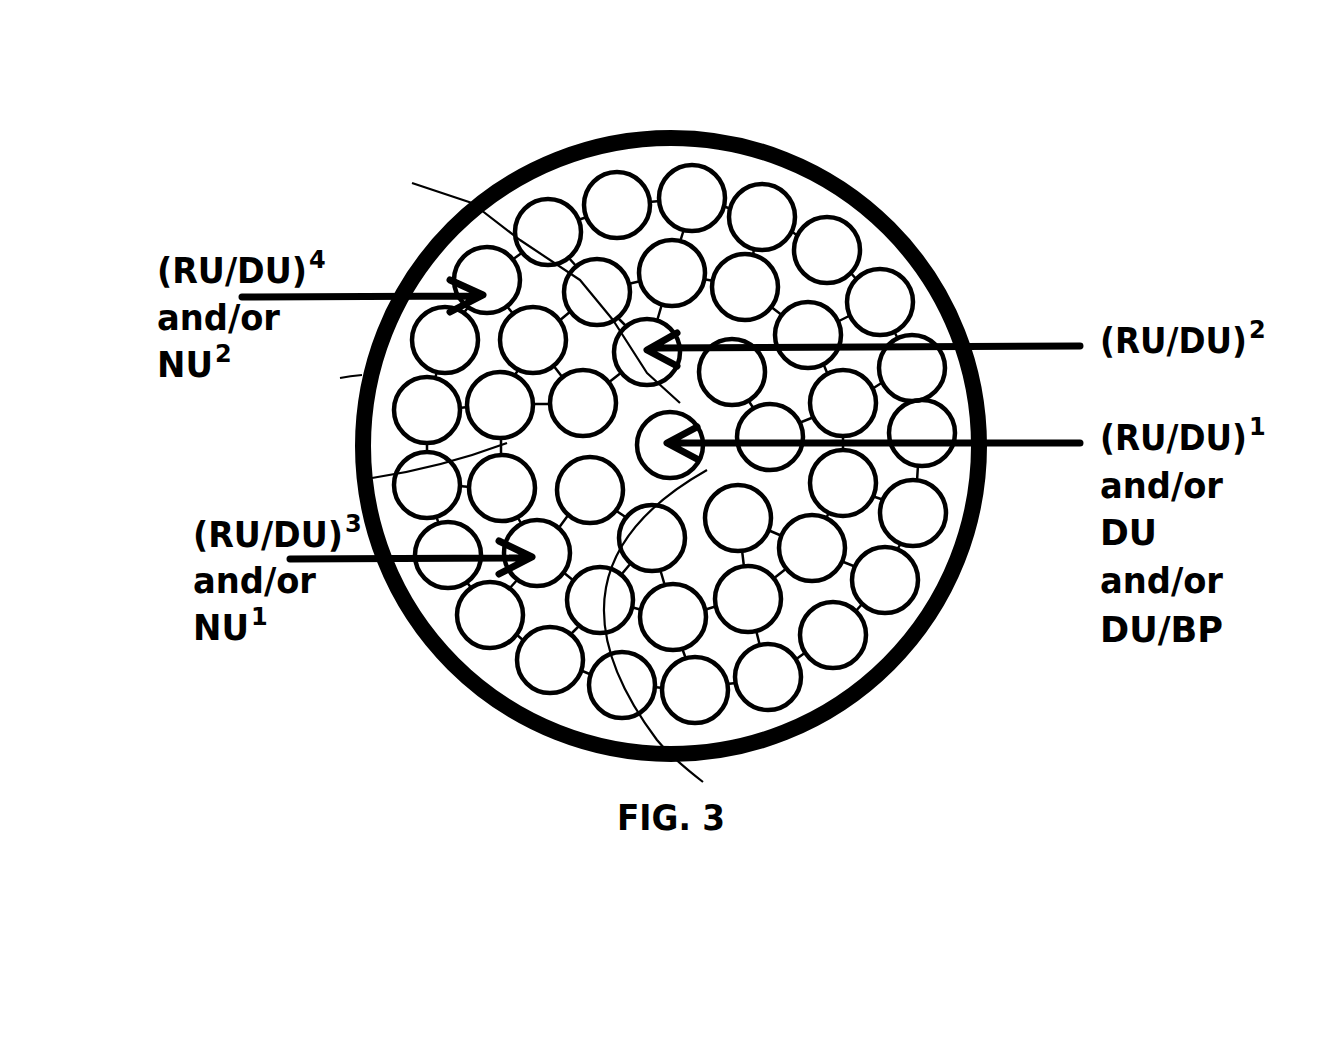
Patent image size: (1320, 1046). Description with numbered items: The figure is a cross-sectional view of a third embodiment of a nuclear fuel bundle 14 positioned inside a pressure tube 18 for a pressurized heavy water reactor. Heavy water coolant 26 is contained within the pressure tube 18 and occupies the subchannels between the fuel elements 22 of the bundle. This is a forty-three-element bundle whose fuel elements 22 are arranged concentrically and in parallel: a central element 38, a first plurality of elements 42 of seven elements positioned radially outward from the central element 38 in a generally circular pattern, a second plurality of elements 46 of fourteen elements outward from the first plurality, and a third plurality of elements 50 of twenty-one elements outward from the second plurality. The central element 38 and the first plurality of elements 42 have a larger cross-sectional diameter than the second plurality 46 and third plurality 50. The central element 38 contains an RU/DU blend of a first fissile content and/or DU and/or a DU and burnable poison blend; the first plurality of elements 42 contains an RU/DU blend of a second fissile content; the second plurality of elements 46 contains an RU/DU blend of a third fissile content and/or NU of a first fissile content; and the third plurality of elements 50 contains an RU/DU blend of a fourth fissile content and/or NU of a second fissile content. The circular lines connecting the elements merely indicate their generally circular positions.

The fuel bundle 14 is at (560, 186).
The pressure tube 18 is at (740, 135).
The fuel elements 22 is at (848, 482).
The heavy water coolant 26 is at (817, 208).
The central element 38 is at (518, 280).
The first plurality of elements 42 is at (678, 633).
The second plurality of elements 46 is at (353, 479).
The third plurality of elements 50 is at (340, 378).